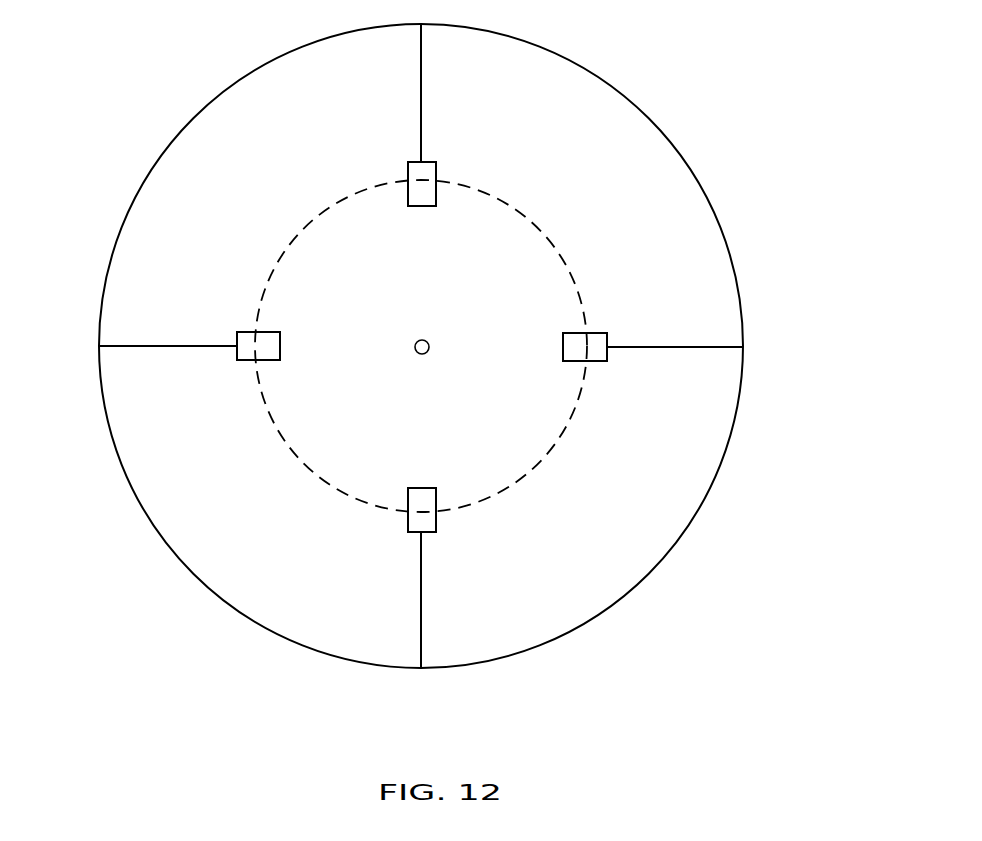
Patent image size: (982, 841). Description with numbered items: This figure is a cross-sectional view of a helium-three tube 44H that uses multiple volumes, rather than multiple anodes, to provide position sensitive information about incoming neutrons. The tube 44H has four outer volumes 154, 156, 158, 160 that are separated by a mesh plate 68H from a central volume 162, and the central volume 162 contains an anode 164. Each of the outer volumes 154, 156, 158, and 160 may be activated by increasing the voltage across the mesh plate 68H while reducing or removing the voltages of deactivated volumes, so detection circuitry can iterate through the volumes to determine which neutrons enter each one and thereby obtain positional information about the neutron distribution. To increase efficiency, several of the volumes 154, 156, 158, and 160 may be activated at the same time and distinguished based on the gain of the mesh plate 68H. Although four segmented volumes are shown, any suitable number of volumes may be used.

The Helium-3 tube 44H is at (417, 369).
The volume 154 is at (617, 120).
The volume 156 is at (567, 610).
The volume 158 is at (197, 543).
The volume 160 is at (143, 230).
The central volume 162 is at (518, 233).
The mesh plate 68H is at (540, 467).
The anode 164 is at (418, 355).